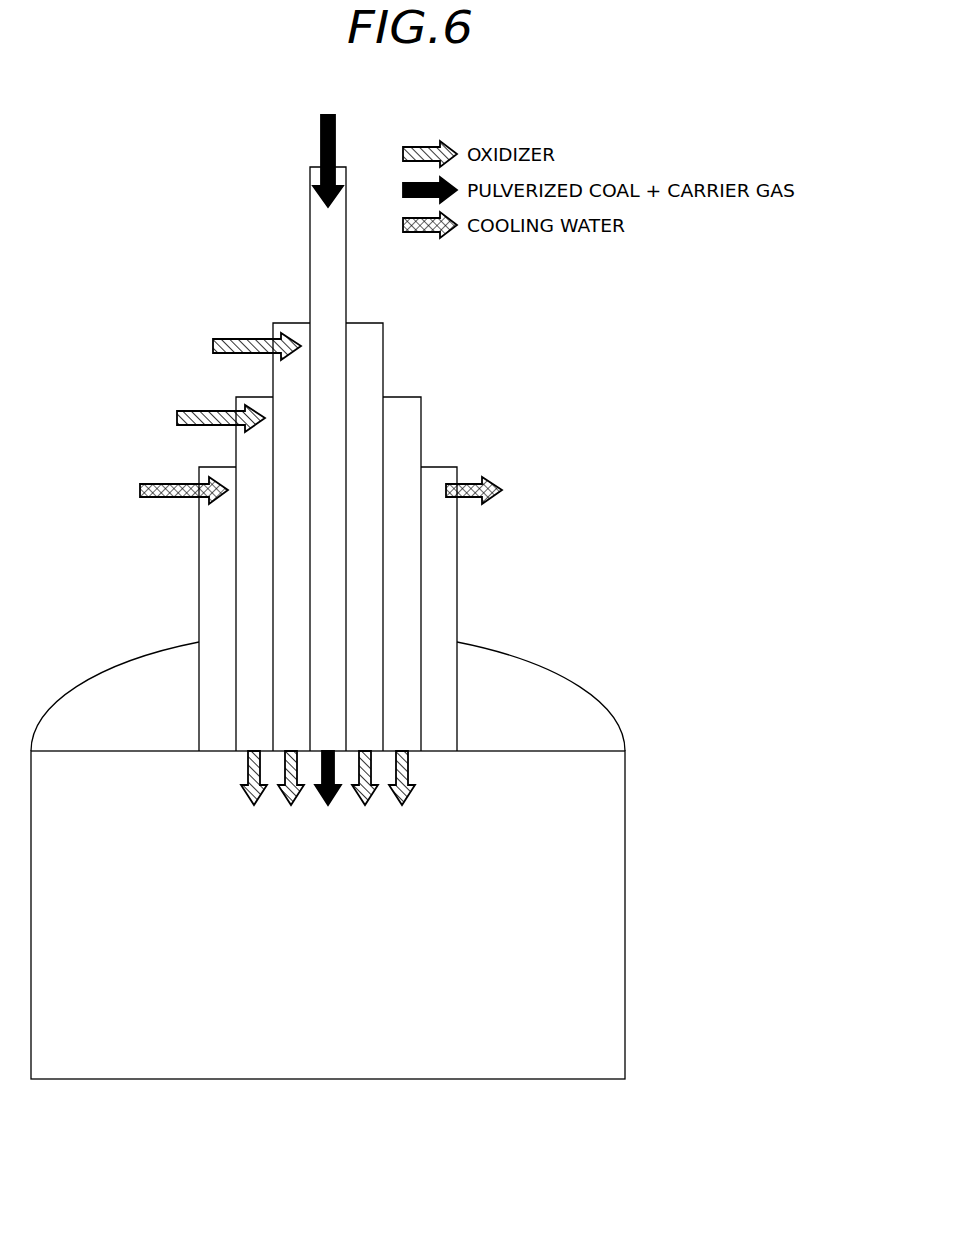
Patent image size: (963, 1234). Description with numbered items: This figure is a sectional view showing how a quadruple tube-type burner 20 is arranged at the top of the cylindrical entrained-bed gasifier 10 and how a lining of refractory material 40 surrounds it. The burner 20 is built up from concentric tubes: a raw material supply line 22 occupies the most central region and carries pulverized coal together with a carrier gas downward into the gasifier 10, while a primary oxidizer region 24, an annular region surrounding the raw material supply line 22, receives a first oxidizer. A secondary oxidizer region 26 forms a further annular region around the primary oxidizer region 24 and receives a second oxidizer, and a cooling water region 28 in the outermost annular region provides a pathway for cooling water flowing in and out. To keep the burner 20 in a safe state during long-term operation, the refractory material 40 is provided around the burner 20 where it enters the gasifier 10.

The gasifier 10 is at (625, 868).
The burner 20 is at (207, 233).
The raw material supply line 22 is at (346, 233).
The primary oxidizer region 24 is at (294, 323).
The secondary oxidizer region 26 is at (257, 397).
The cooling water region 28 is at (220, 467).
The refractory material 40 is at (546, 685).